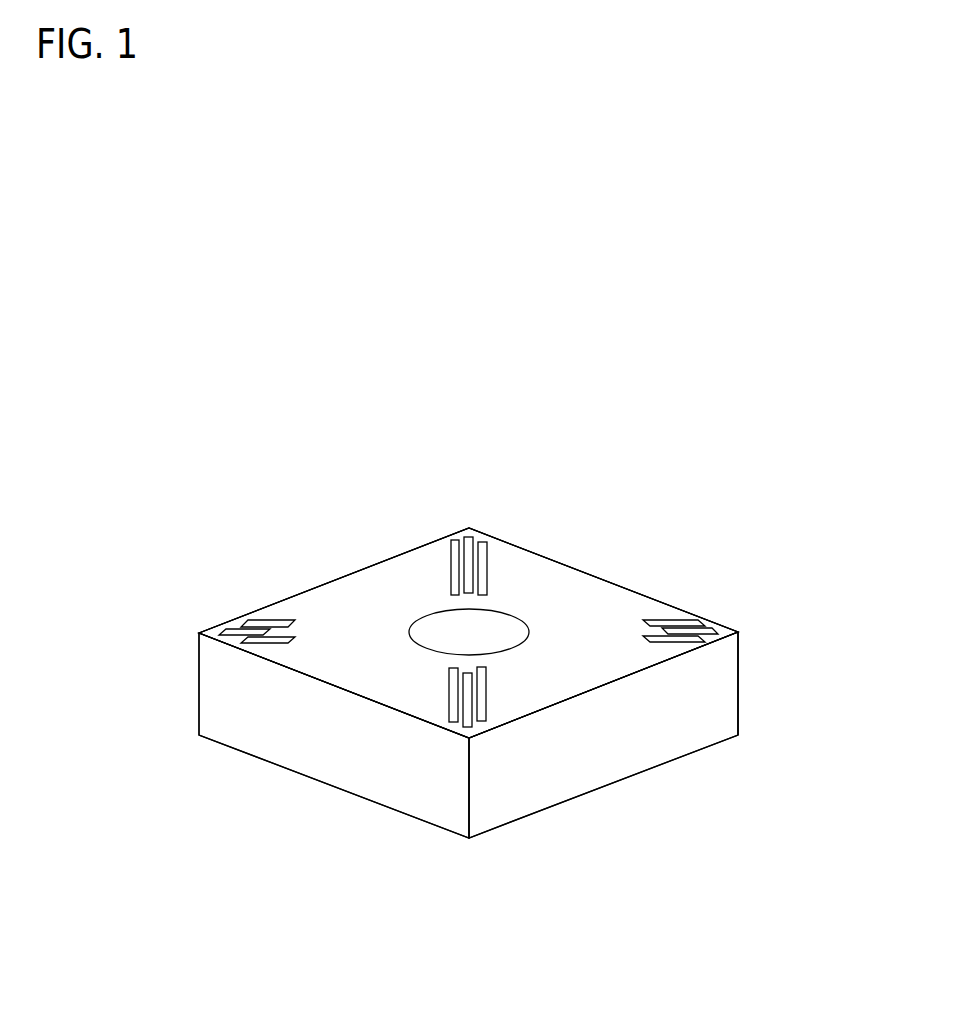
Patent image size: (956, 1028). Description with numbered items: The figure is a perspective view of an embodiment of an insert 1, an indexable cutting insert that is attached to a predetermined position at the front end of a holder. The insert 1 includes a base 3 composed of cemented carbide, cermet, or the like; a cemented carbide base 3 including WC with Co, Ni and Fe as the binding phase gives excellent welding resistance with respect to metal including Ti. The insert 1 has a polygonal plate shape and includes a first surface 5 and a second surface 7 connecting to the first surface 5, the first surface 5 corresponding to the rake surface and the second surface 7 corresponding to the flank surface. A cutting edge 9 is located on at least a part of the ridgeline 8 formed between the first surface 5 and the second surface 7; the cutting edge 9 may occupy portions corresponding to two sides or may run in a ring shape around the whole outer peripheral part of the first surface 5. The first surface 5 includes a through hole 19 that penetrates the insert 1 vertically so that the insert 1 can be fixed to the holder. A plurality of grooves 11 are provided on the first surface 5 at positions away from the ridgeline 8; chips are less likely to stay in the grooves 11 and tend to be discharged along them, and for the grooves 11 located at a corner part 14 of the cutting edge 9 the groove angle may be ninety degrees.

The insert 1 is at (338, 484).
The base 3 is at (207, 676).
The first surface 5 is at (600, 613).
The second surface 7 is at (677, 702).
The ridgeline 8 is at (330, 686).
The cutting edge 9 is at (437, 725).
The grooves 11 is at (235, 630).
The corner part 14 is at (738, 632).
The through hole 19 is at (505, 640).